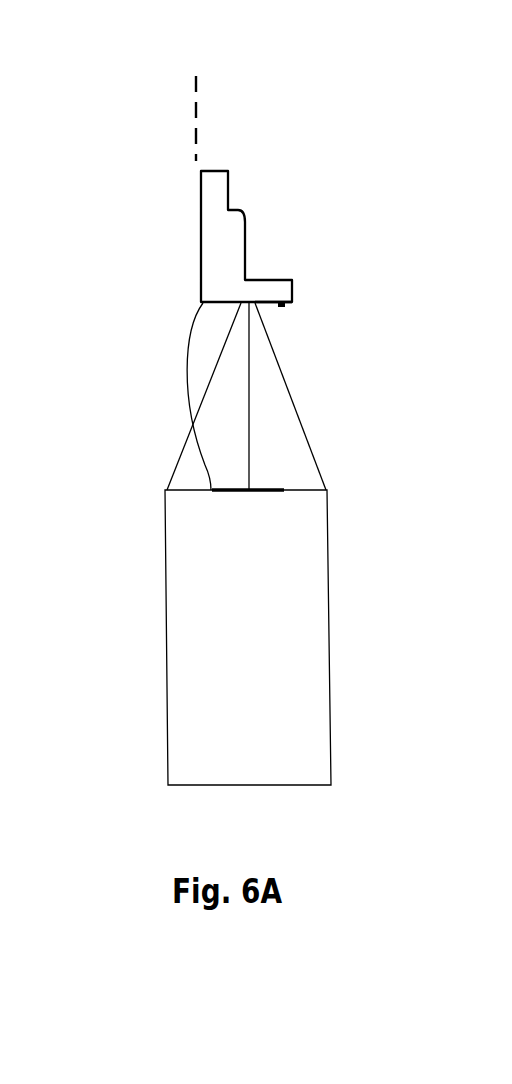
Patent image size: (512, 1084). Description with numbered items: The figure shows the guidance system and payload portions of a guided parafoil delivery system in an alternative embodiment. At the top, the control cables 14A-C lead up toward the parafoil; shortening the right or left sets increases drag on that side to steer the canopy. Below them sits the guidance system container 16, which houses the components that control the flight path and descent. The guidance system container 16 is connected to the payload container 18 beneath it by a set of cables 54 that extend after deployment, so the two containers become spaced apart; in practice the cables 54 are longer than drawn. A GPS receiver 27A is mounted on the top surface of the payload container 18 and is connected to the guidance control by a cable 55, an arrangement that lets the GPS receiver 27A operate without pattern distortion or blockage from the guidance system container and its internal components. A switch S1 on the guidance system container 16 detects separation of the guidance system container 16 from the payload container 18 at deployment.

The control cables 14A-C is at (205, 70).
The guidance system container 16 is at (172, 197).
The cable 55 is at (180, 322).
The cables 54 is at (261, 355).
The switch S1 is at (298, 319).
The GPS receiver 27A is at (283, 480).
The payload container 18 is at (337, 566).